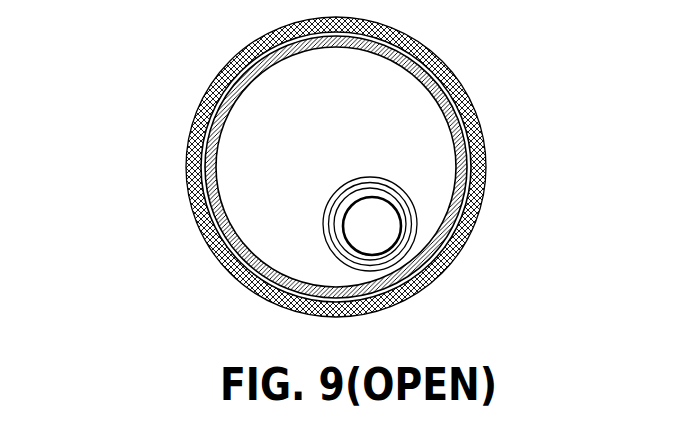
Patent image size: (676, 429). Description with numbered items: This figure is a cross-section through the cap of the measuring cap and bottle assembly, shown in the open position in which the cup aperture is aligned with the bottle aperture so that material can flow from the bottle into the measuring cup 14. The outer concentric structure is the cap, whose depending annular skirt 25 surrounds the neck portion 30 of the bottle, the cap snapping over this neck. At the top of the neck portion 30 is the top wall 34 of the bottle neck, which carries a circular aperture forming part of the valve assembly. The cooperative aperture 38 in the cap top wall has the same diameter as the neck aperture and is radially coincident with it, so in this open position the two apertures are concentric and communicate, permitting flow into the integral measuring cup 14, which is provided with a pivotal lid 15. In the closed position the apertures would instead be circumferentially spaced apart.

The annular skirt 25 is at (190, 139).
The top wall of the bottle neck 34 is at (285, 90).
The neck portion 30 is at (217, 192).
The measuring cup 14 is at (362, 190).
The aperture 38 is at (412, 197).
The pivotal lid 15 is at (377, 227).